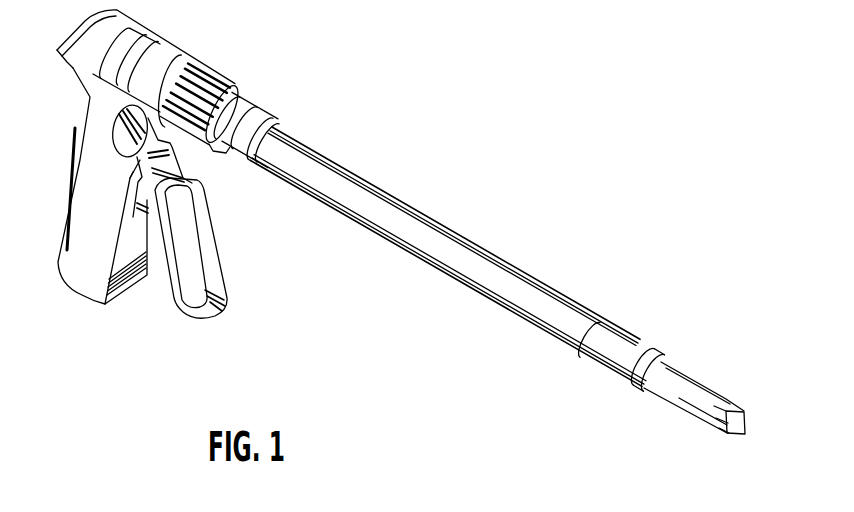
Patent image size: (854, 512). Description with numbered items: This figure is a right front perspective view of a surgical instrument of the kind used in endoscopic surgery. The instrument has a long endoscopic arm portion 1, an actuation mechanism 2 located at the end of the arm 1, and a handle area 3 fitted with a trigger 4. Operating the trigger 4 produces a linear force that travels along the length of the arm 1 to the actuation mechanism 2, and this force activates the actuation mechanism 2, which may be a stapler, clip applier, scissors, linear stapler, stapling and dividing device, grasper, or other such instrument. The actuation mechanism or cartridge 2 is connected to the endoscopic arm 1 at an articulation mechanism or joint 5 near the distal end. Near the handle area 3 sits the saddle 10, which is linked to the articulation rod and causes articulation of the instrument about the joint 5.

The endoscopic arm portion 1 is at (472, 258).
The actuation mechanism 2 is at (692, 380).
The handle area 3 is at (88, 265).
The trigger 4 is at (202, 228).
The articulation mechanism or joint 5 is at (613, 378).
The saddle 10 is at (170, 58).